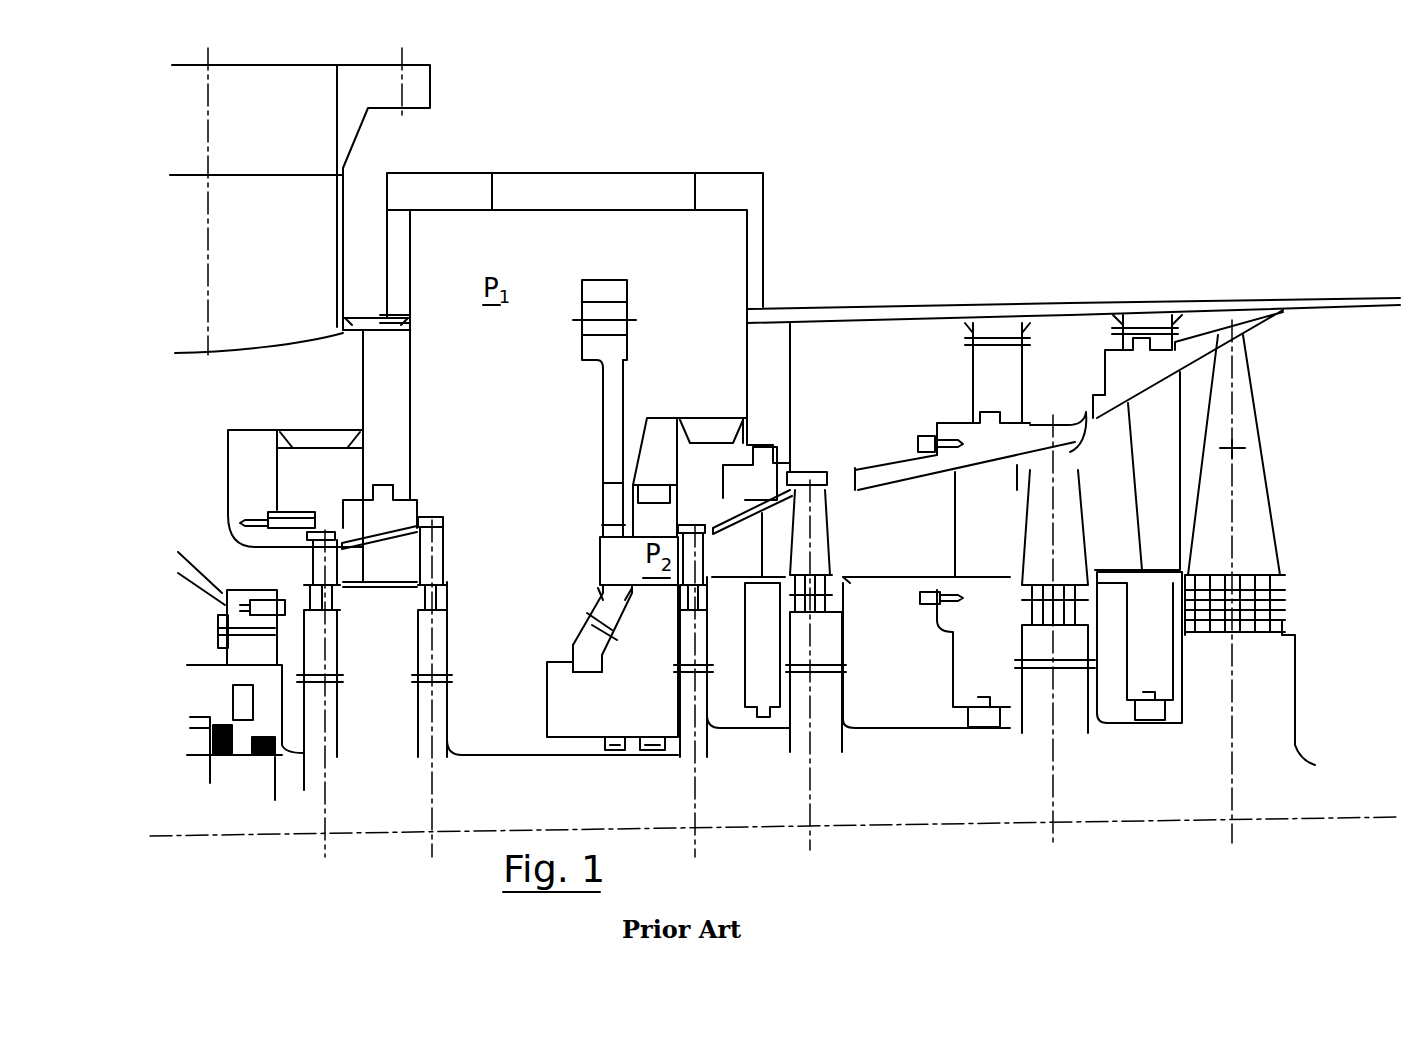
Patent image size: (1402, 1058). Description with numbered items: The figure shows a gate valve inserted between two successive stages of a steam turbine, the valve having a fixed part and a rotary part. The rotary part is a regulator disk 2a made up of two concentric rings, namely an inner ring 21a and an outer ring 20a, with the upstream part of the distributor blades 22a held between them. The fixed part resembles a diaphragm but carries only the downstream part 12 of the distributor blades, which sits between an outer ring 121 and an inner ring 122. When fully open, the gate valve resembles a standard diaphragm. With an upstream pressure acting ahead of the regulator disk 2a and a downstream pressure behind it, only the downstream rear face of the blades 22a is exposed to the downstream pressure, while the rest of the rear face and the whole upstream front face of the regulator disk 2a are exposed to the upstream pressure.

The rotary part (regulator disk) 2a is at (572, 628).
The downstream part of the distributor blades 12 is at (667, 545).
The outer ring 20a is at (608, 558).
The inner ring 21a is at (608, 603).
The upstream part of the distributor blades 22a is at (607, 503).
The outer ring 121 is at (658, 488).
The inner ring 122 is at (573, 699).